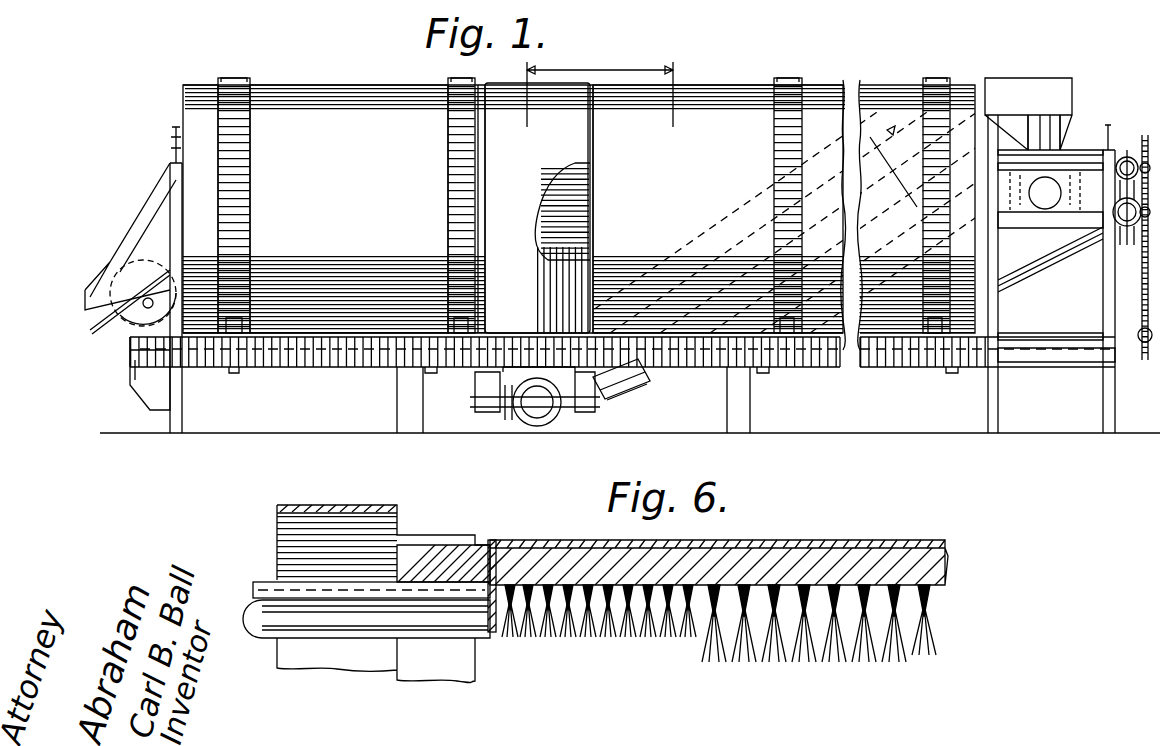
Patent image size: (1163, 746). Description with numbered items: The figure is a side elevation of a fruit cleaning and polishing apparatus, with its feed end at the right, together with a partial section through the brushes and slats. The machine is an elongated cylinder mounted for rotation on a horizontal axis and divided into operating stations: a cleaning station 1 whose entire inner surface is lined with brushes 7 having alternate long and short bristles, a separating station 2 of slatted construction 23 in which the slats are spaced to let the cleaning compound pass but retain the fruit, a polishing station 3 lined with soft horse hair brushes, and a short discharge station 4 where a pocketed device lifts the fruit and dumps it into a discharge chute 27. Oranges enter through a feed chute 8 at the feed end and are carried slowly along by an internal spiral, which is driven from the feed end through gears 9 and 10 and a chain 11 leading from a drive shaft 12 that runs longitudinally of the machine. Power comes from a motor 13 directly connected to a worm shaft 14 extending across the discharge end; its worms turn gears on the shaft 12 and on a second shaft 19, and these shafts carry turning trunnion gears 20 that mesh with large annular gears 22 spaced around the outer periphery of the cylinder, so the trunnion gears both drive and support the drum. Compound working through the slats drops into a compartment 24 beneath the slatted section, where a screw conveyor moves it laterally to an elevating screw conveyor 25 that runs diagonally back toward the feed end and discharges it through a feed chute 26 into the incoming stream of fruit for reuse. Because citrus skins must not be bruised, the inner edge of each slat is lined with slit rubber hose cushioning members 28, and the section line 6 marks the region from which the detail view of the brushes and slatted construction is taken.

In FIG. 1, the cleaning station 1 is at (845, 209).
In FIG. 6, the cleaning station 1 is at (885, 540).
In FIG. 1, the separating station 2 is at (535, 208).
In FIG. 1, the polishing station 3 is at (349, 209).
In FIG. 1, the discharge station 4 is at (200, 209).
In FIG. 1, the section line 6 is at (599, 86).
In FIG. 6, the brushes 7 is at (935, 597).
In FIG. 1, the feed chute 8 is at (1032, 250).
In FIG. 1, the gear 9 is at (1127, 245).
In FIG. 1, the gear 10 is at (1128, 153).
In FIG. 1, the chain 11 is at (1156, 206).
In FIG. 1, the drive shaft 12 is at (1020, 338).
In FIG. 1, the motor 13 is at (100, 328).
In FIG. 1, the worm shaft 14 is at (148, 303).
In FIG. 1, the shaft 19 is at (163, 346).
In FIG. 1, the turning trunnion gear 20 is at (922, 373).
In FIG. 1, the annular gears 22 is at (910, 72).
In FIG. 1, the slatted construction 23 is at (585, 190).
In FIG. 6, the slatted construction 23 is at (253, 590).
In FIG. 1, the compartment 24 is at (537, 426).
In FIG. 1, the elevating screw conveyor 25 is at (565, 385).
In FIG. 1, the feed chute 26 is at (1060, 130).
In FIG. 1, the discharge chute 27 is at (143, 260).
In FIG. 6, the rubber hose cushioning members 28 is at (250, 618).